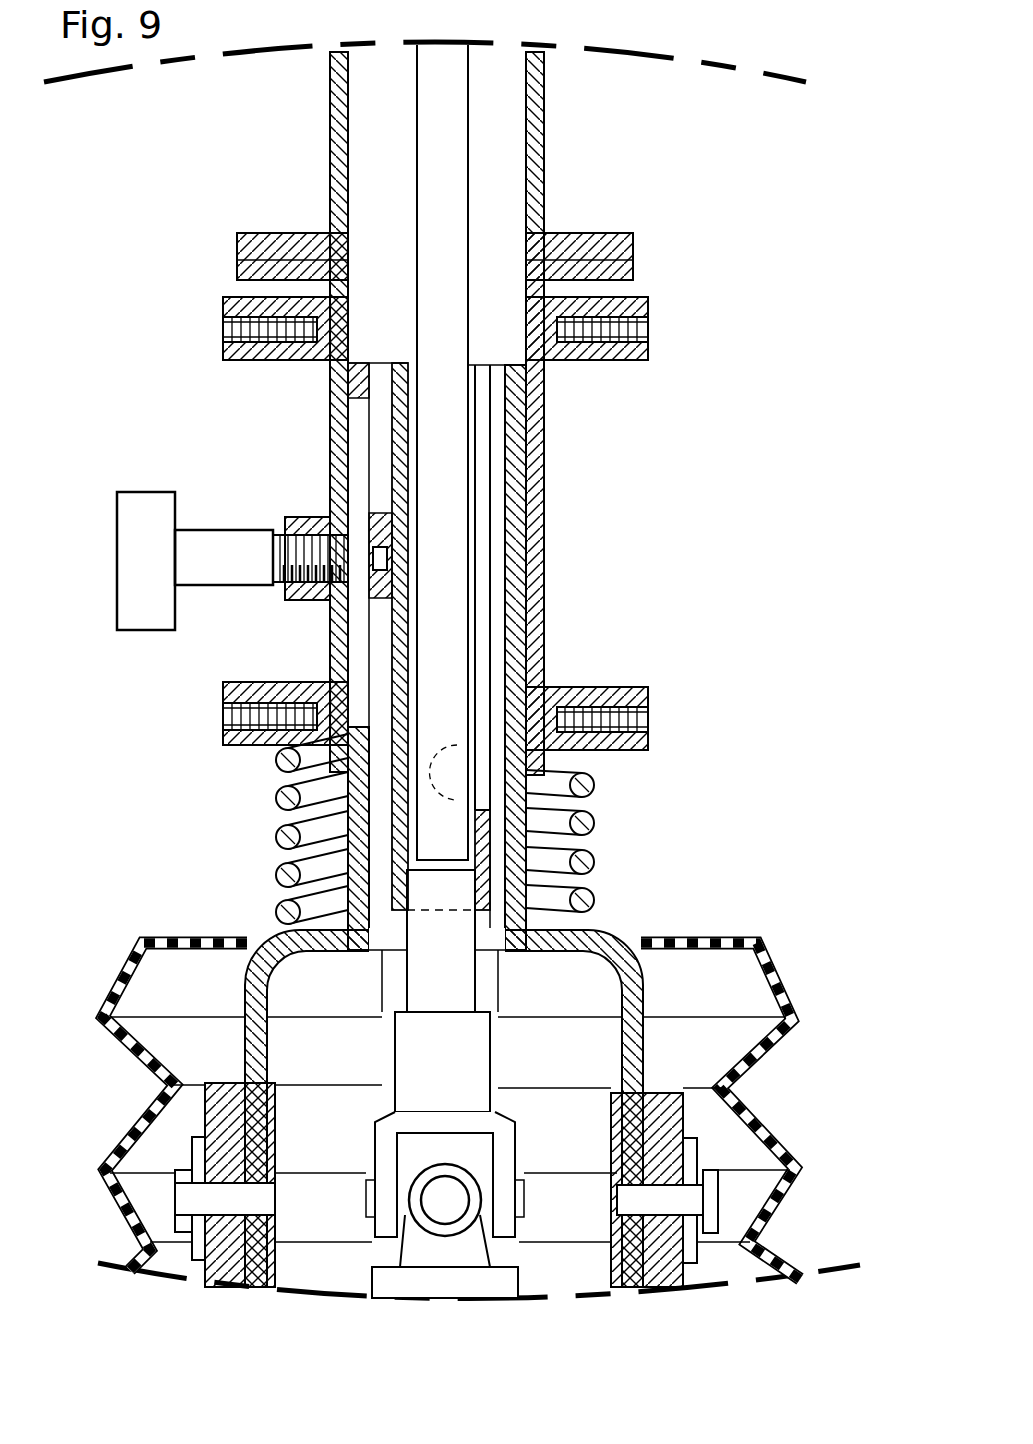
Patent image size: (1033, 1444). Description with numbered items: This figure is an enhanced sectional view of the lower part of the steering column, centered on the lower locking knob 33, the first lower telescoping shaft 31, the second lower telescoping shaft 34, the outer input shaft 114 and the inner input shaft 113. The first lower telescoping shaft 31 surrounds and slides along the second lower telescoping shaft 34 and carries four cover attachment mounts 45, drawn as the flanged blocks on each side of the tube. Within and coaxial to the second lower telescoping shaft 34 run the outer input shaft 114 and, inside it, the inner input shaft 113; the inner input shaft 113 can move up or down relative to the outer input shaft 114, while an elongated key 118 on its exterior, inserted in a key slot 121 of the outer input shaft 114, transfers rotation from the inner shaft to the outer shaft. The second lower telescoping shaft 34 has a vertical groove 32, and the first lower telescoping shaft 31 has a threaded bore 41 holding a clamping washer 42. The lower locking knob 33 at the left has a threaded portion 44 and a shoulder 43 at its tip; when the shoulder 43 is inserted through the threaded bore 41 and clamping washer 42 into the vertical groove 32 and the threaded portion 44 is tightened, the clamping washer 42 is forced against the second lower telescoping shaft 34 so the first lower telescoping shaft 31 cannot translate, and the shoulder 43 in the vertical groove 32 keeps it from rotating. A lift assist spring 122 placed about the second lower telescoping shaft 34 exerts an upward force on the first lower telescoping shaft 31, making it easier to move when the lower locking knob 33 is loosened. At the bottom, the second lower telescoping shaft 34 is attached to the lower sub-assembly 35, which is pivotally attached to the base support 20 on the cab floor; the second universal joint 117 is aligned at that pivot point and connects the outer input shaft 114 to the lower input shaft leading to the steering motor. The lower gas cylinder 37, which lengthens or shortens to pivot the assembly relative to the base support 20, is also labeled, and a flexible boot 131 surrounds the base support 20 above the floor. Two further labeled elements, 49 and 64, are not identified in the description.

The base support 20 is at (660, 1100).
The first lower telescoping shaft 31 is at (547, 440).
The vertical groove 32 is at (357, 462).
The lower locking knob 33 is at (130, 500).
The second lower telescoping shaft 34 is at (545, 610).
The lower sub-assembly 35 is at (283, 930).
The lower gas cylinder 37 is at (505, 1003).
The threaded bore 41 is at (300, 600).
The clamping washer 42 is at (388, 603).
The shoulder 43 is at (387, 558).
The threaded portion 44 is at (318, 553).
The cover attachment mounts 45 is at (222, 300).
The spacer 49 is at (410, 365).
The upper tube 64 is at (335, 160).
The inner input shaft 113 is at (447, 193).
The outer input shaft 114 is at (483, 605).
The second universal joint 117 is at (448, 1198).
The elongated key 118 is at (447, 735).
The key slot 121 is at (480, 817).
The lift assist spring 122 is at (597, 787).
The flexible boot 131 is at (772, 975).